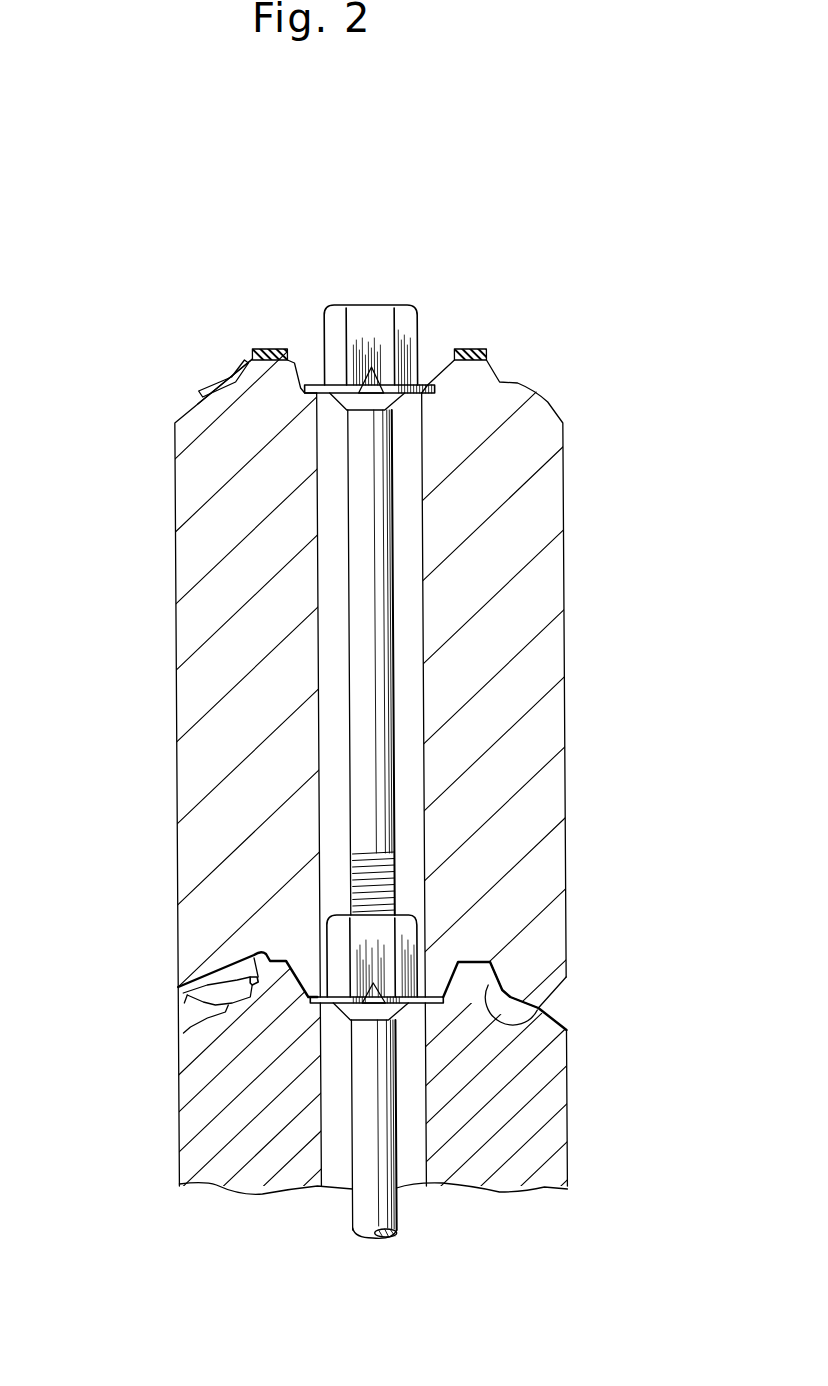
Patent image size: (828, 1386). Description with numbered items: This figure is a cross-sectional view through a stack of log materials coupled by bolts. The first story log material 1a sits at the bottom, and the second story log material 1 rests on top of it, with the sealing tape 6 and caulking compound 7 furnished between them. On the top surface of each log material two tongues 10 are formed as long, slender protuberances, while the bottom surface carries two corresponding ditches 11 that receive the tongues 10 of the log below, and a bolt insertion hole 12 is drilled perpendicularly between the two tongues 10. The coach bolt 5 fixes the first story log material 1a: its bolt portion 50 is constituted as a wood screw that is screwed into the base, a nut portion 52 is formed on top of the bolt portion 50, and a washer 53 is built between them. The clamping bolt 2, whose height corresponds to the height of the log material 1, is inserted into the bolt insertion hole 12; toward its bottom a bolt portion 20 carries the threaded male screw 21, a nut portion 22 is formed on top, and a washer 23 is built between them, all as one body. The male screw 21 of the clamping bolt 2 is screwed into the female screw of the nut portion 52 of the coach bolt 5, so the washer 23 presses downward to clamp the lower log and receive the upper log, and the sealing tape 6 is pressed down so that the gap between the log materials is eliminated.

The log material 1 is at (566, 556).
The first story log material 1a is at (558, 1130).
The clamping bolt 2 is at (333, 663).
The coach bolt 5 is at (402, 1207).
The sealing tape 6 is at (268, 349).
The caulking compound 7 is at (199, 391).
The tongue 10 is at (272, 372).
The ditch 11 is at (181, 1003).
The bolt insertion hole 12 is at (425, 682).
The bolt portion 20 is at (382, 748).
The male screw 21 is at (393, 883).
The nut portion 22 is at (373, 320).
The washer 23 is at (425, 385).
The bolt portion 50 is at (357, 1196).
The nut portion 52 is at (342, 936).
The washer 53 is at (319, 1017).